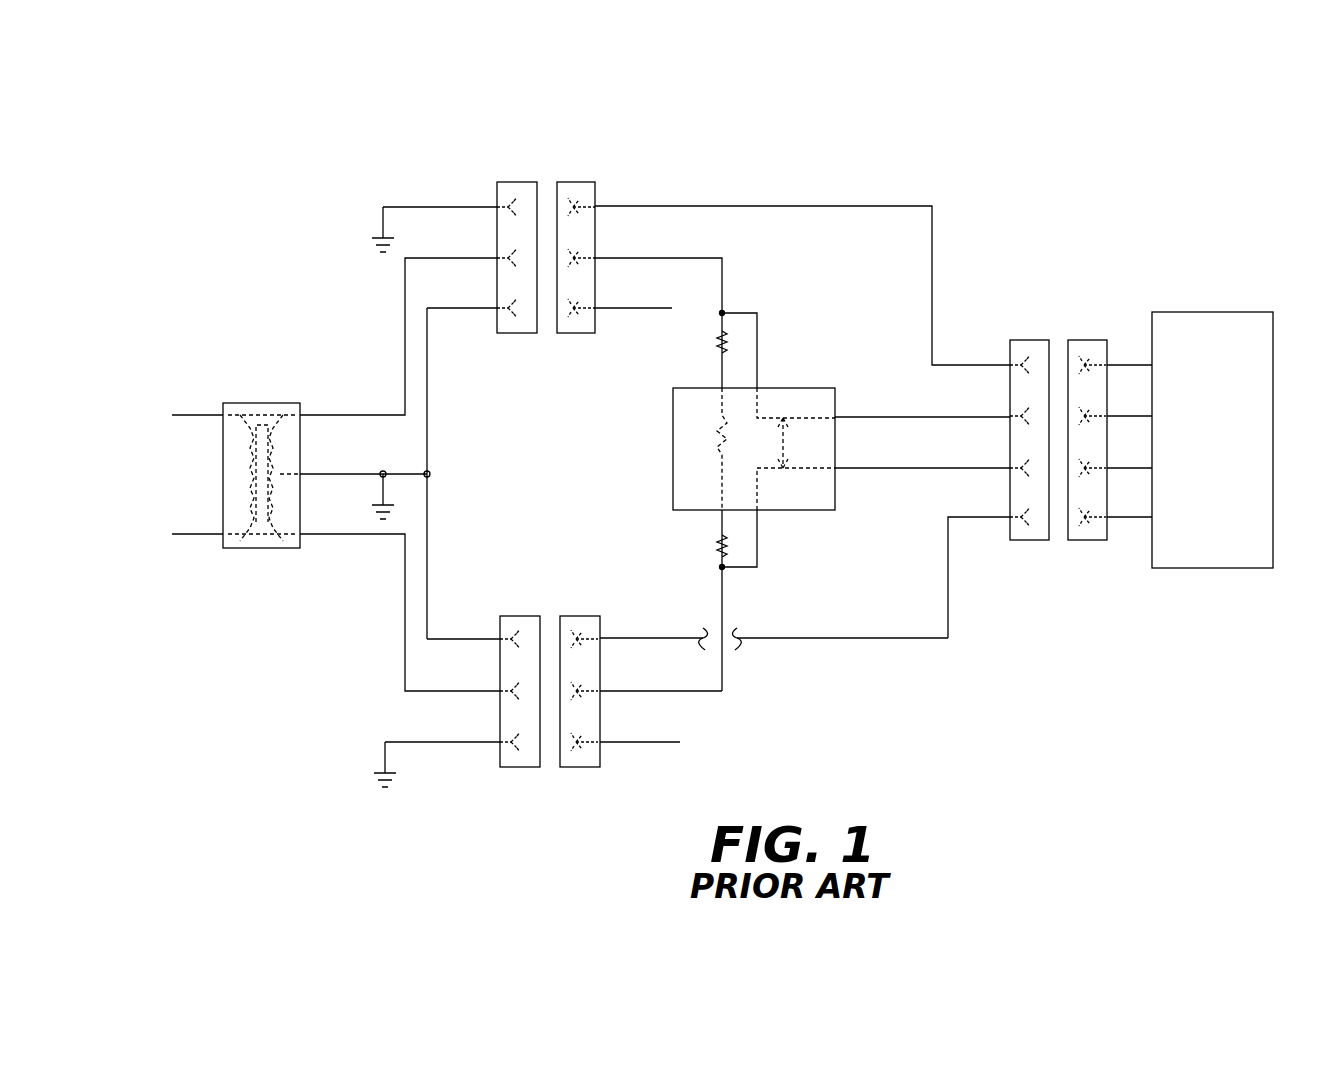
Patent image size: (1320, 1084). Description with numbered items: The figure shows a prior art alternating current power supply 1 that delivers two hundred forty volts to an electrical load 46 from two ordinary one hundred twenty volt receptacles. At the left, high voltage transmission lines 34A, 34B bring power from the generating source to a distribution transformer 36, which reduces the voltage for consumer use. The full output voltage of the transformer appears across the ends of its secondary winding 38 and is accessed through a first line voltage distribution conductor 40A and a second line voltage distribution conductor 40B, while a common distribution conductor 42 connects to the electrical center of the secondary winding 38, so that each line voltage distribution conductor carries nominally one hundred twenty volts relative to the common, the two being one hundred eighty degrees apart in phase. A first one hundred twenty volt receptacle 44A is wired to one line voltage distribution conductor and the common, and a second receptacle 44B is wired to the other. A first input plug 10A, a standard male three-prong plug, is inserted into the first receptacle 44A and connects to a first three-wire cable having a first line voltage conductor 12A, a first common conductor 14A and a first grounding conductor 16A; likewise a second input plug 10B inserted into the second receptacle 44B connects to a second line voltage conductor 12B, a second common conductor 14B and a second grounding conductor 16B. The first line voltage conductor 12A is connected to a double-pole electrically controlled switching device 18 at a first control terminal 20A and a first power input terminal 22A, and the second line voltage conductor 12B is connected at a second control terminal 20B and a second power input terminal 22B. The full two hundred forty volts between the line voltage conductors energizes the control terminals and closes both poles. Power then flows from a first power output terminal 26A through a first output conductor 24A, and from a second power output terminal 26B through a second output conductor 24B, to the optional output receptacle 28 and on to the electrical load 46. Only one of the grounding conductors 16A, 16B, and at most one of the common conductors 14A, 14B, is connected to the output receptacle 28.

The alternating current power supply 1 is at (884, 160).
The first input plug 10A is at (578, 182).
The second input plug 10B is at (585, 767).
The first line voltage conductor 12A is at (663, 258).
The second line voltage conductor 12B is at (660, 691).
The first common conductor 14A is at (662, 308).
The second common conductor 14B is at (662, 638).
The first grounding conductor 16A is at (657, 206).
The second grounding conductor 16B is at (662, 742).
The switching device 18 is at (673, 472).
The first control terminal 20A is at (716, 372).
The second control terminal 20B is at (716, 530).
The first power input terminal 22A is at (762, 365).
The second power input terminal 22B is at (762, 523).
The first output conductor 24A is at (928, 417).
The second output conductor 24B is at (925, 468).
The first power output terminal 26A is at (873, 417).
The second power output terminal 26B is at (887, 468).
The output receptacle 28 is at (1030, 340).
The high voltage transmission line 34A is at (180, 415).
The high voltage transmission line 34B is at (180, 534).
The distribution transformer 36 is at (232, 403).
The secondary winding 38 is at (276, 430).
The first line voltage distribution conductor 40A is at (363, 415).
The second line voltage distribution conductor 40B is at (357, 534).
The common distribution conductor 42 is at (360, 474).
The first 120-volt receptacle 44A is at (520, 182).
The second receptacle 44B is at (522, 767).
The electrical load 46 is at (1213, 312).